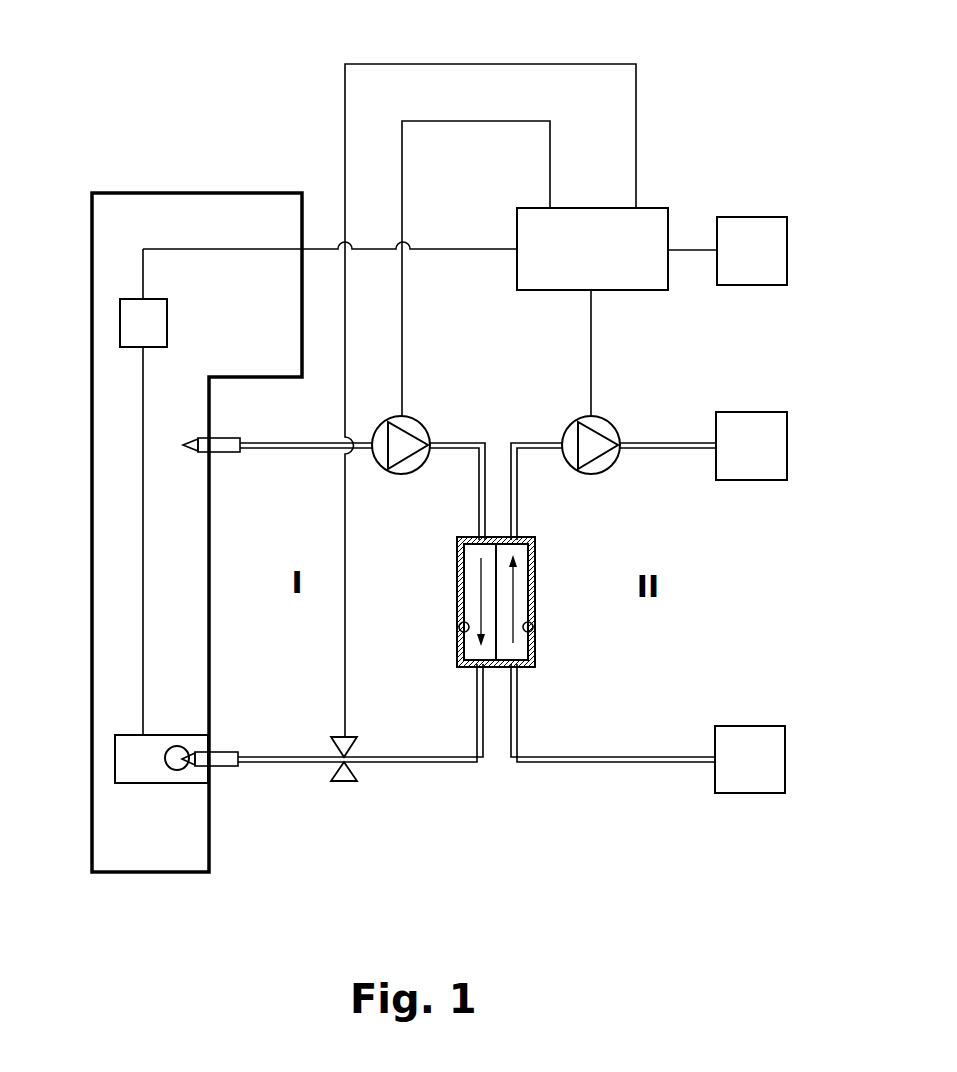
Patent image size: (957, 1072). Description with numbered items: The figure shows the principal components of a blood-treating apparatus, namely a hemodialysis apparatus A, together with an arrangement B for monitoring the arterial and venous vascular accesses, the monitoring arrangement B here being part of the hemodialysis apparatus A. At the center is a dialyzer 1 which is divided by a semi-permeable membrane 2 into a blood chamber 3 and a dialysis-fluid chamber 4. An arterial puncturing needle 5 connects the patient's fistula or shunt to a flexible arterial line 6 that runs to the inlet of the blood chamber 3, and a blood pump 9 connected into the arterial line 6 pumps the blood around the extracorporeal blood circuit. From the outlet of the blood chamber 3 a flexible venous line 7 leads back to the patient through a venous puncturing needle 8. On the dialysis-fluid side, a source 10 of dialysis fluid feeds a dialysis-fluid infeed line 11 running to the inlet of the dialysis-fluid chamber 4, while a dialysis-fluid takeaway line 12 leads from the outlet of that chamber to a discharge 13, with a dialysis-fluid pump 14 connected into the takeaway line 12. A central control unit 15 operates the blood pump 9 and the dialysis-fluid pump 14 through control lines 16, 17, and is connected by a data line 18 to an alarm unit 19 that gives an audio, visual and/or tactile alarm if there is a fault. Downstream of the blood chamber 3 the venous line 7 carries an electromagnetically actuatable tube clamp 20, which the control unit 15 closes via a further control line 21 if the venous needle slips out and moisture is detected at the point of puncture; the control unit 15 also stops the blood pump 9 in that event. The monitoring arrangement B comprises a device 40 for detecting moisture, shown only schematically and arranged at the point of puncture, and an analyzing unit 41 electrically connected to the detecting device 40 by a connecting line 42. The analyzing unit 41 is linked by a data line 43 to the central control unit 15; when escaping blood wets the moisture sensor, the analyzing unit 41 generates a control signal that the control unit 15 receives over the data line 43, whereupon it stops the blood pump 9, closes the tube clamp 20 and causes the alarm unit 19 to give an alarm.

The dialyzer 1 is at (535, 537).
The semi-permeable membrane 2 is at (497, 588).
The blood chamber 3 is at (459, 627).
The dialysis-fluid chamber 4 is at (533, 627).
The arterial puncturing needle 5 is at (225, 452).
The flexible arterial line 6 is at (295, 448).
The flexible venous line 7 is at (402, 767).
The venous puncturing needle 8 is at (225, 767).
The blood pump 9 is at (418, 420).
The source of dialysis fluid 10 is at (750, 793).
The dialysis-fluid infeed line 11 is at (612, 762).
The dialysis-fluid takeaway line 12 is at (643, 450).
The discharge 13 is at (752, 412).
The dialysis-fluid pump 14 is at (580, 473).
The central control unit 15 is at (540, 290).
The control line 16 is at (476, 121).
The control line 17 is at (592, 365).
The data line 18 is at (693, 250).
The alarm unit 19 is at (752, 217).
The tube clamp 20 is at (340, 785).
The further control line 21 is at (350, 593).
The device for detecting moisture 40 is at (135, 770).
The analyzing unit 41 is at (119, 321).
The connecting line 42 is at (142, 535).
The data line 43 is at (145, 275).
The hemodialysis apparatus A is at (708, 645).
The monitoring arrangement B is at (137, 172).